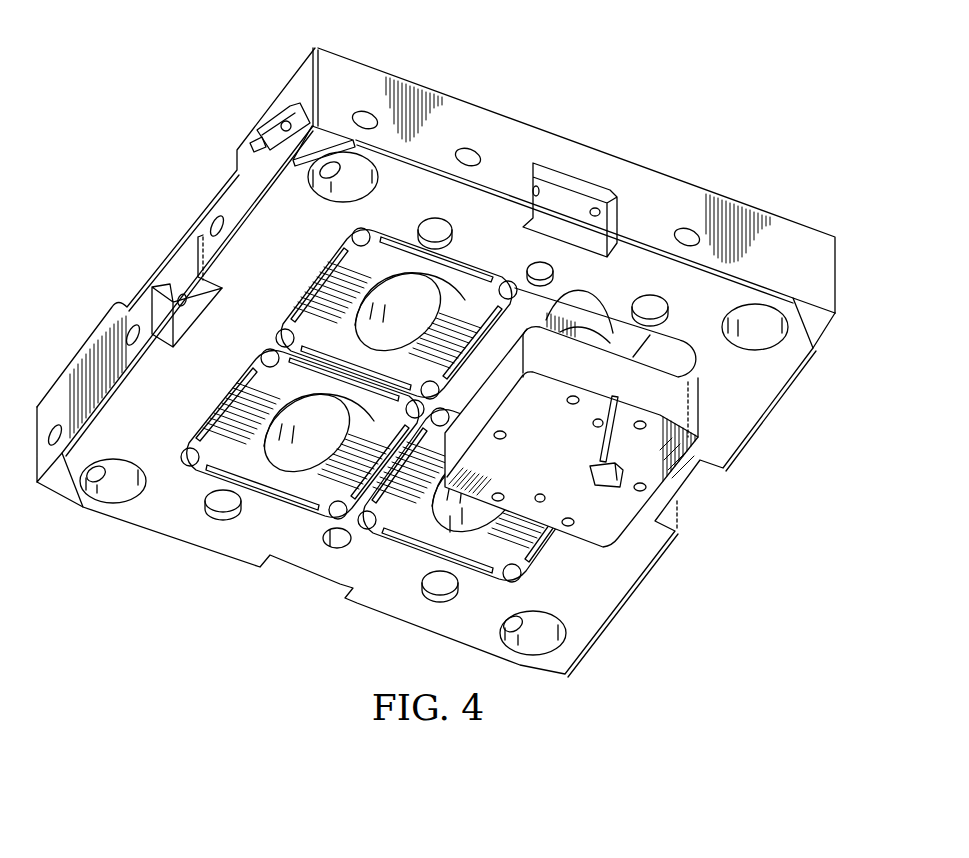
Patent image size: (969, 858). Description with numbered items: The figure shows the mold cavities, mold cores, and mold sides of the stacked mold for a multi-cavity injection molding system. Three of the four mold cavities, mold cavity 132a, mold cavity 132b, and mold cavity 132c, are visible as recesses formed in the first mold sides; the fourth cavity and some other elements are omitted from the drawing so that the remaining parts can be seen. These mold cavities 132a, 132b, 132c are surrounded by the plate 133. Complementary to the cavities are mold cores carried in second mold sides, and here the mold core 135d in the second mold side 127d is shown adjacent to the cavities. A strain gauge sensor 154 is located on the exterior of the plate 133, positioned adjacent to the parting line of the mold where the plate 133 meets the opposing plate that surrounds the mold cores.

The plate 133 is at (510, 136).
The strain gauge sensor 154 is at (271, 132).
The mold cavity 132a is at (383, 343).
The mold cavity 132b is at (303, 469).
The mold cavity 132c is at (472, 525).
The mold core 135d is at (582, 323).
The second mold side 127d is at (672, 398).